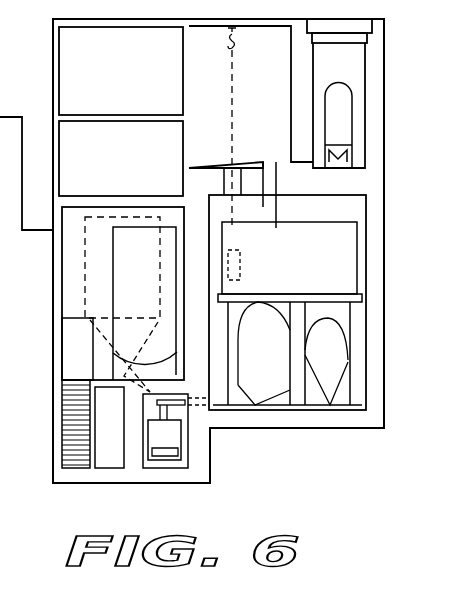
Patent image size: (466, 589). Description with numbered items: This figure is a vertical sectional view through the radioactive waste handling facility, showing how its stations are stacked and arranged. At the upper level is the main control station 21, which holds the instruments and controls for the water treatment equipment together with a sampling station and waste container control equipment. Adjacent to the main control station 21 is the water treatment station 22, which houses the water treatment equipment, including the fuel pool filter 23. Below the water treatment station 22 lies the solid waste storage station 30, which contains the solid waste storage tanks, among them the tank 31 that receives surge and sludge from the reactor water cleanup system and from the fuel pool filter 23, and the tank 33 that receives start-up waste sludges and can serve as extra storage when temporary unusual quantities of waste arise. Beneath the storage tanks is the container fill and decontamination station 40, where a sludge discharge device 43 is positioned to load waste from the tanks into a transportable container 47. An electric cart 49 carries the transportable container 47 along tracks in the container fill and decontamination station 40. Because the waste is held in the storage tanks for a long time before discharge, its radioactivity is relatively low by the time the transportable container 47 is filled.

The main control station 21 is at (144, 75).
The water treatment station 22 is at (380, 74).
The fuel pool filter 23 is at (347, 101).
The solid waste storage station 30 is at (383, 398).
The tank 31 is at (304, 280).
The tank 33 is at (72, 283).
The container fill and decontamination station 40 is at (137, 448).
The sludge discharge device 43 is at (173, 395).
The transportable container 47 is at (177, 433).
The electric cart 49 is at (135, 450).